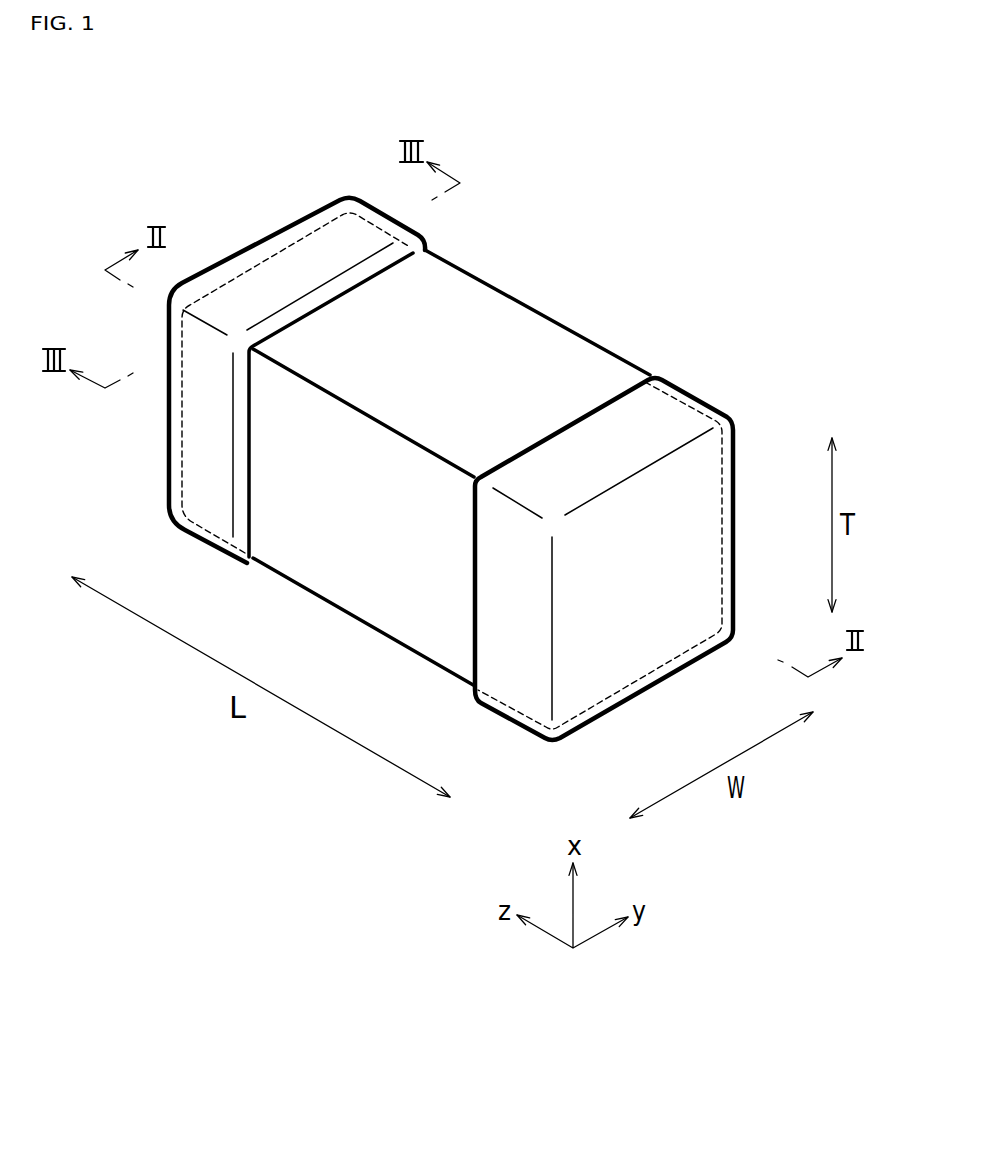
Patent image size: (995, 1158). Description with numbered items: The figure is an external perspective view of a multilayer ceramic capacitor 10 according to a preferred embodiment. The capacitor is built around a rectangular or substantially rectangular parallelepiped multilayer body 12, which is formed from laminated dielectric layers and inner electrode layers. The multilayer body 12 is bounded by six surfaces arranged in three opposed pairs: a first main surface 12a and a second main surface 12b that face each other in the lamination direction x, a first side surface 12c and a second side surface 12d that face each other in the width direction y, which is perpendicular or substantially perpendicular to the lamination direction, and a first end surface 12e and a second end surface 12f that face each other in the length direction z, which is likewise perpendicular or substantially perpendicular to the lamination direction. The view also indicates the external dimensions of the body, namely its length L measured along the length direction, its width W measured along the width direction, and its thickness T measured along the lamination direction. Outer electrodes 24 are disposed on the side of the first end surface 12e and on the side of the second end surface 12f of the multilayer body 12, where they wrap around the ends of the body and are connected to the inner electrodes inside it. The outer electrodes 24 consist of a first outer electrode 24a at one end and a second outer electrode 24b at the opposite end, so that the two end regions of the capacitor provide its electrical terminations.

The multilayer ceramic capacitor 10 is at (108, 170).
The multilayer body 12 is at (585, 347).
The first main surface 12a is at (533, 345).
The second main surface 12b is at (330, 587).
The first side surface 12c is at (397, 610).
The second side surface 12d is at (487, 320).
The first end surface 12e is at (279, 266).
The second end surface 12f is at (687, 520).
The outer electrodes 24 is at (290, 870).
The first outer electrode 24a is at (370, 203).
The second outer electrode 24b is at (692, 393).